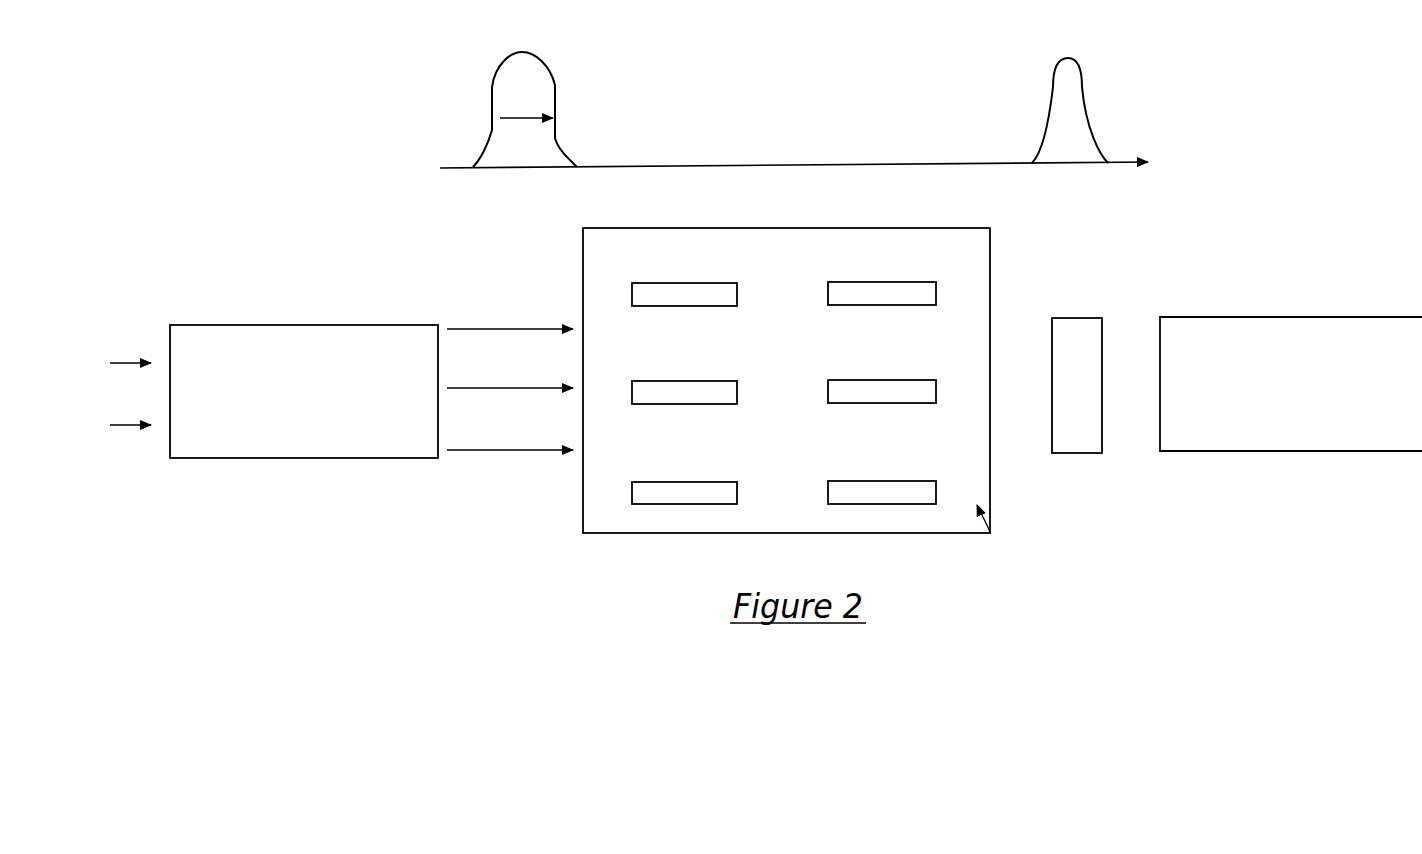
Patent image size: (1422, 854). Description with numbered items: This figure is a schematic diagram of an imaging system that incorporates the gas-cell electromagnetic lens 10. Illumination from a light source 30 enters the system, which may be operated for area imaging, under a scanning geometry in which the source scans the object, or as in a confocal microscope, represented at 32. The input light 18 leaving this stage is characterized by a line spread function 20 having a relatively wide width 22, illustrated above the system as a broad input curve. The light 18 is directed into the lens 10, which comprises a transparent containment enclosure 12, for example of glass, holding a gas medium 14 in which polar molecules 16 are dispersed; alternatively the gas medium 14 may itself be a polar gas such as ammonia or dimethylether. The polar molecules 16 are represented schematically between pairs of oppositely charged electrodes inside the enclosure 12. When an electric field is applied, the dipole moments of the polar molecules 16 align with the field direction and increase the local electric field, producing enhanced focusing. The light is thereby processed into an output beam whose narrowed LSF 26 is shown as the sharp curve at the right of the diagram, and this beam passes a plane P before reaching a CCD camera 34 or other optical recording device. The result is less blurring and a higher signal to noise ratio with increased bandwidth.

The electromagnetic lens 10 is at (797, 213).
The containment enclosure 12 is at (915, 534).
The gas medium 14 is at (990, 532).
The polar molecules 16 is at (670, 508).
The input light 18 is at (513, 453).
The line spread function 20 is at (555, 103).
The width 22 is at (518, 117).
The LSF 26 is at (1087, 115).
The light source 30 is at (123, 361).
The confocal microscope 32 is at (302, 461).
The CCD camera 34 is at (1293, 452).
The detector plane P is at (1074, 316).